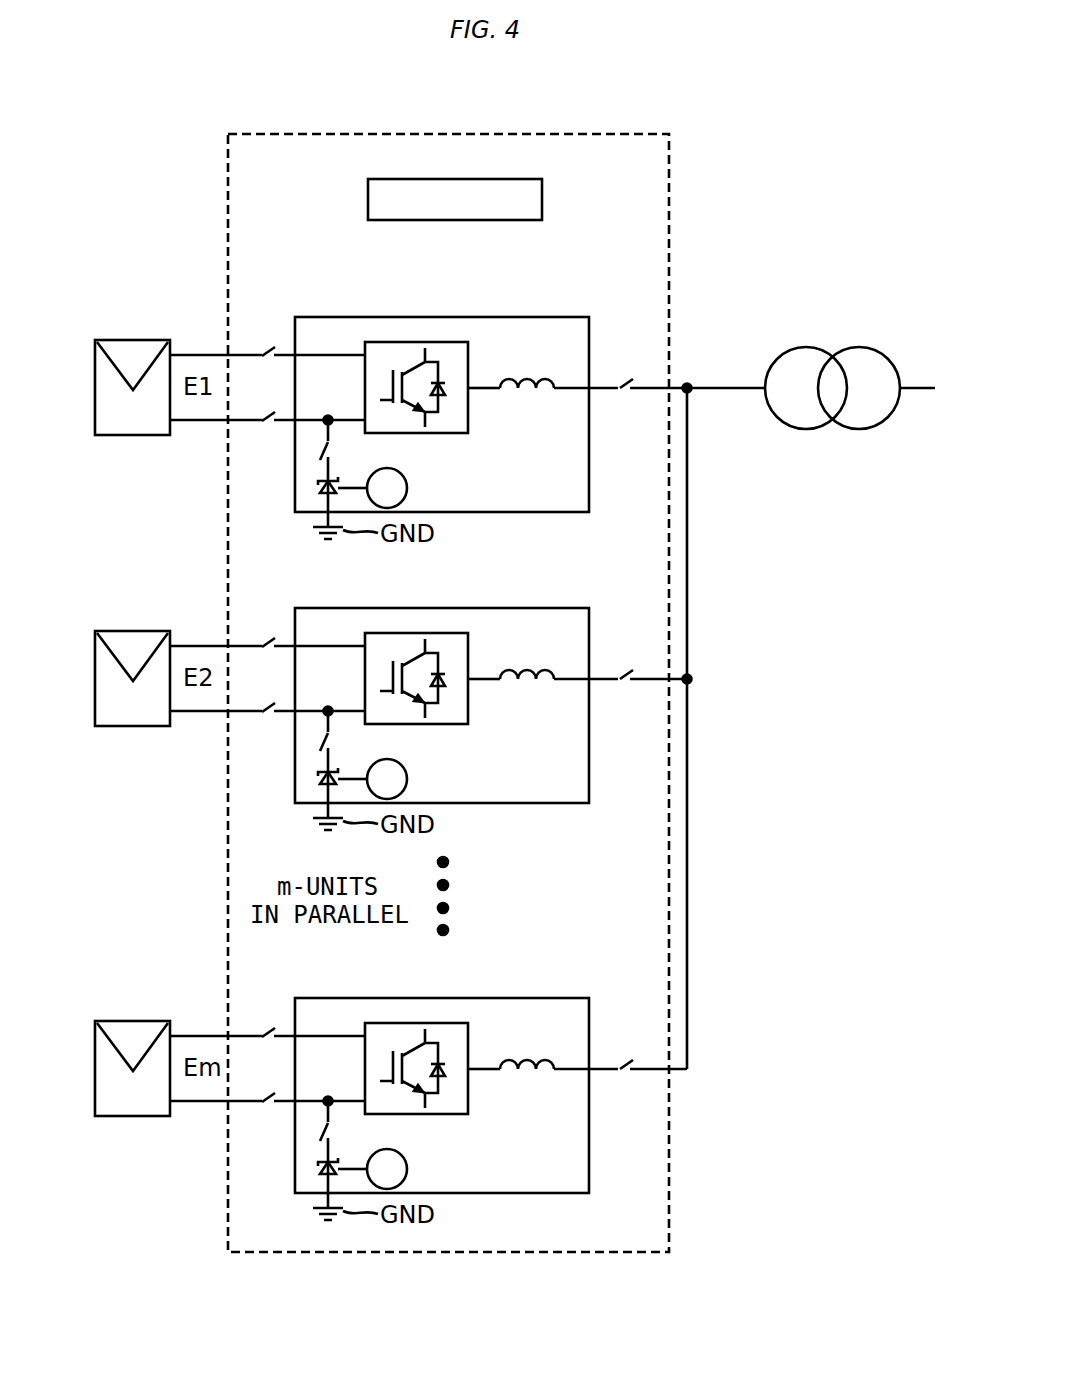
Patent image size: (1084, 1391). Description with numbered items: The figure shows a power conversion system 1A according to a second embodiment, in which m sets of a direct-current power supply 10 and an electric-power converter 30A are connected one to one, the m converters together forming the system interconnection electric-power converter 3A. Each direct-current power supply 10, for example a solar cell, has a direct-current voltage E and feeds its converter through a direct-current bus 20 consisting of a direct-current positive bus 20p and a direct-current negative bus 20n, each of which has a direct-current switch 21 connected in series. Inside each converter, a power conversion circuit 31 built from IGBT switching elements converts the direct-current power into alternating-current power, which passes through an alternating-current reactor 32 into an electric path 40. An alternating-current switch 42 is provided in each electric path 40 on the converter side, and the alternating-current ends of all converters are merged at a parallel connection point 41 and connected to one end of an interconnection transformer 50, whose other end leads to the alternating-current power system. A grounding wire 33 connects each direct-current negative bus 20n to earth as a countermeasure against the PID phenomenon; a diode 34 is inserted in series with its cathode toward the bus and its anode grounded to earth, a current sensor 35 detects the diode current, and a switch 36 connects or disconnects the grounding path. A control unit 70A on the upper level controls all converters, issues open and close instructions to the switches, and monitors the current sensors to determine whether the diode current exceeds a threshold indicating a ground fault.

The power conversion system 1A is at (845, 183).
The system interconnection electric-power converter 3A is at (669, 143).
The direct-current power supply 10 is at (105, 340).
The direct-current bus 20 is at (181, 730).
The direct-current positive bus 20p is at (188, 352).
The direct-current negative bus 20n is at (185, 425).
The direct-current switch 21 is at (265, 348).
The electric-power converter 30A is at (540, 317).
The power conversion circuit 31 is at (468, 343).
The alternating-current reactor 32 is at (535, 380).
The grounding wire 33 is at (323, 442).
The diode 34 is at (325, 492).
The current sensor 35 is at (407, 488).
The switch 36 is at (332, 445).
The electric path 40 is at (650, 390).
The parallel connection point 41 is at (690, 386).
The alternating-current switch 42 is at (632, 380).
The interconnection transformer 50 is at (861, 347).
The control unit 70A is at (542, 197).